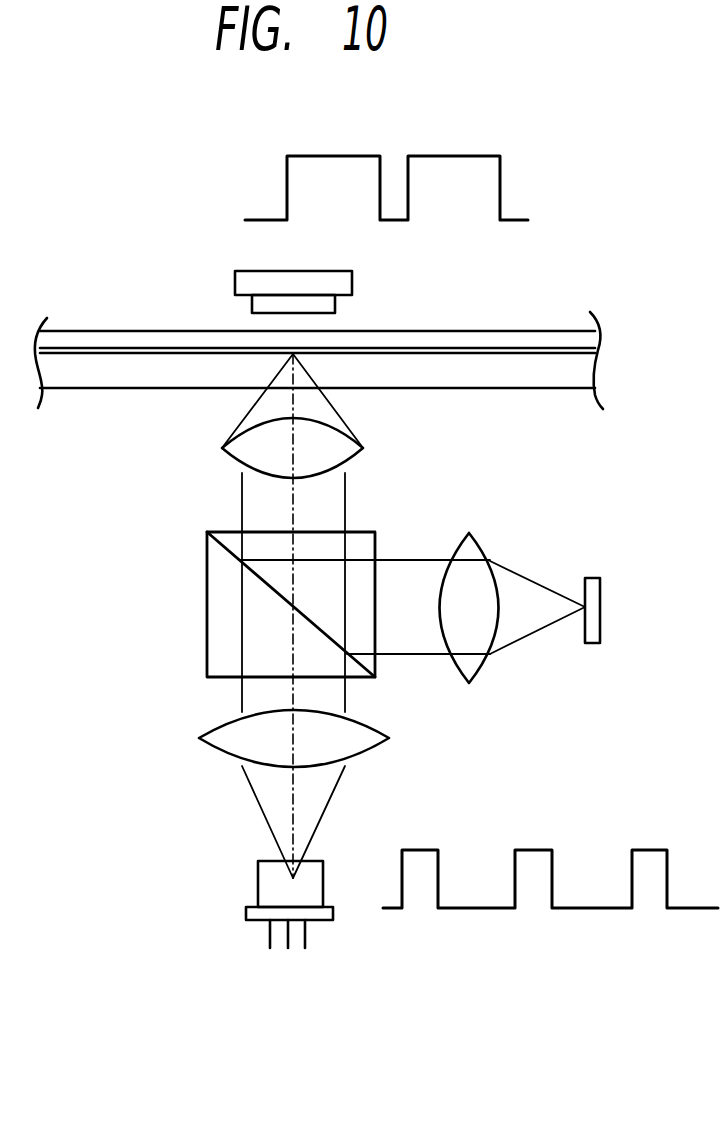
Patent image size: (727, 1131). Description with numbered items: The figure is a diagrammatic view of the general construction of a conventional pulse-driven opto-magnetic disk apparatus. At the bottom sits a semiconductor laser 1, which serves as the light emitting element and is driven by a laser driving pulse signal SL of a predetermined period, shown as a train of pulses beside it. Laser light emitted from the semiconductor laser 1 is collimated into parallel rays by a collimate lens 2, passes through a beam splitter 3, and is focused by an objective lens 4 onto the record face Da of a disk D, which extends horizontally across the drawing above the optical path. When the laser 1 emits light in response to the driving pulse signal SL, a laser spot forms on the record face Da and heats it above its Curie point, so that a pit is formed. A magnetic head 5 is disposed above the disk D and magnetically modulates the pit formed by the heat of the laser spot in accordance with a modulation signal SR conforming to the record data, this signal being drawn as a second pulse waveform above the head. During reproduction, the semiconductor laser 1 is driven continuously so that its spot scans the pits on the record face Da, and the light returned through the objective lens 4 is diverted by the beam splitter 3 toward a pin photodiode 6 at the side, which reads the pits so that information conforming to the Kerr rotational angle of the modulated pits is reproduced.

The semiconductor laser 1 is at (270, 890).
The collimate lens 2 is at (377, 729).
The beam splitter 3 is at (213, 595).
The objective lens 4 is at (222, 449).
The magnetic head 5 is at (352, 274).
The pin photodiode 6 is at (600, 580).
The disk D is at (319, 403).
The record face Da is at (398, 354).
The modulation signal SR is at (482, 156).
The laser driving pulse signal SL is at (545, 913).